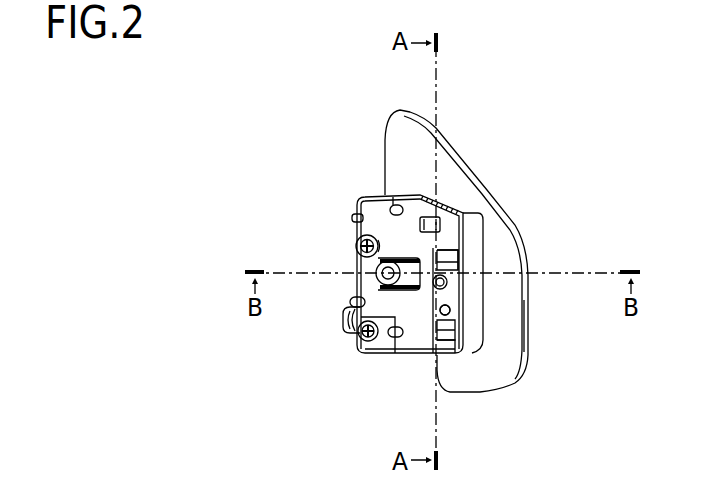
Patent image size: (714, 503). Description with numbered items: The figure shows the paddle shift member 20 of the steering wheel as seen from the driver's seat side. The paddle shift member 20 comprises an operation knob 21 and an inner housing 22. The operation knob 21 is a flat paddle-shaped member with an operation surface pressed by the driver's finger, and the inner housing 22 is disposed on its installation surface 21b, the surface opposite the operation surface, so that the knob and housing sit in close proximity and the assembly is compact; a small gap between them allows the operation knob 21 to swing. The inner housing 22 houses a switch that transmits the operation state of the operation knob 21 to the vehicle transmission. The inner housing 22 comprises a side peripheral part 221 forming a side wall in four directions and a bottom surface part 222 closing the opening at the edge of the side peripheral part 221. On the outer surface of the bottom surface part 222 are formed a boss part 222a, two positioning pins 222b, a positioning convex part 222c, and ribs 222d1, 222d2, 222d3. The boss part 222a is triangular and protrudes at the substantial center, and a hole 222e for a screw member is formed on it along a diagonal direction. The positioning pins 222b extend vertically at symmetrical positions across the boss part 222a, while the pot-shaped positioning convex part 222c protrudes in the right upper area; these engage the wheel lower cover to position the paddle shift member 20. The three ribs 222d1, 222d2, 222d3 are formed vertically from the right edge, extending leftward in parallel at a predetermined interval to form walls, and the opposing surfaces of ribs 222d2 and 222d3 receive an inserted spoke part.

The paddle shift member 20 is at (521, 111).
The operation knob 21 is at (493, 188).
The installation surface 21b is at (518, 335).
The inner housing 22 is at (363, 193).
The side peripheral part 221 is at (477, 245).
The bottom surface part 222 is at (415, 355).
The boss part 222a is at (363, 301).
The positioning pins 222b is at (393, 205).
The positioning convex part 222c is at (430, 217).
The rib 222d1 is at (457, 262).
The rib 222d2 is at (448, 310).
The rib 222d3 is at (445, 340).
The hole 222e is at (388, 273).